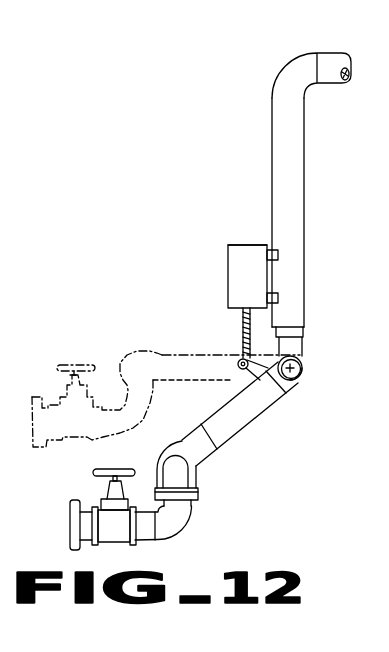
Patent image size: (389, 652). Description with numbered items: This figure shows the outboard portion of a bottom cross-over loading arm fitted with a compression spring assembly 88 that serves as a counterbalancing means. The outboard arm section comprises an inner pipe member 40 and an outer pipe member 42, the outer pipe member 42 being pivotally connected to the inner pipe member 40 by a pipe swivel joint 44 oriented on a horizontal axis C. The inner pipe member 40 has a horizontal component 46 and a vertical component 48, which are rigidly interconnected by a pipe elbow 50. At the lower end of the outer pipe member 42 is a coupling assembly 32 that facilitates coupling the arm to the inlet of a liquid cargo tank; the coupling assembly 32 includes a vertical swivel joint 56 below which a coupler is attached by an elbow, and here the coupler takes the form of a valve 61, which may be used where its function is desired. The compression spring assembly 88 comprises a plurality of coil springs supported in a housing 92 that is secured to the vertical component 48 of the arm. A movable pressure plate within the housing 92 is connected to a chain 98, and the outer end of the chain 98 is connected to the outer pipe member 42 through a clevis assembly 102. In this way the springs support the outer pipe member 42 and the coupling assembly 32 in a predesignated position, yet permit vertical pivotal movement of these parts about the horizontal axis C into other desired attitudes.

The coupling assembly 32 is at (193, 523).
The inner pipe member 40 is at (305, 137).
The outer pipe member 42 is at (250, 417).
The pipe swivel joint 44 is at (299, 358).
The horizontal component 46 is at (338, 52).
The vertical component 48 is at (293, 172).
The pipe elbow 50 is at (283, 76).
The vertical swivel joint 56 is at (198, 494).
The valve 61 is at (128, 545).
The compression spring assembly 88 is at (229, 262).
The housing 92 is at (243, 247).
The chain 98 is at (242, 320).
The clevis assembly 102 is at (240, 367).
The horizontal axis C is at (313, 374).